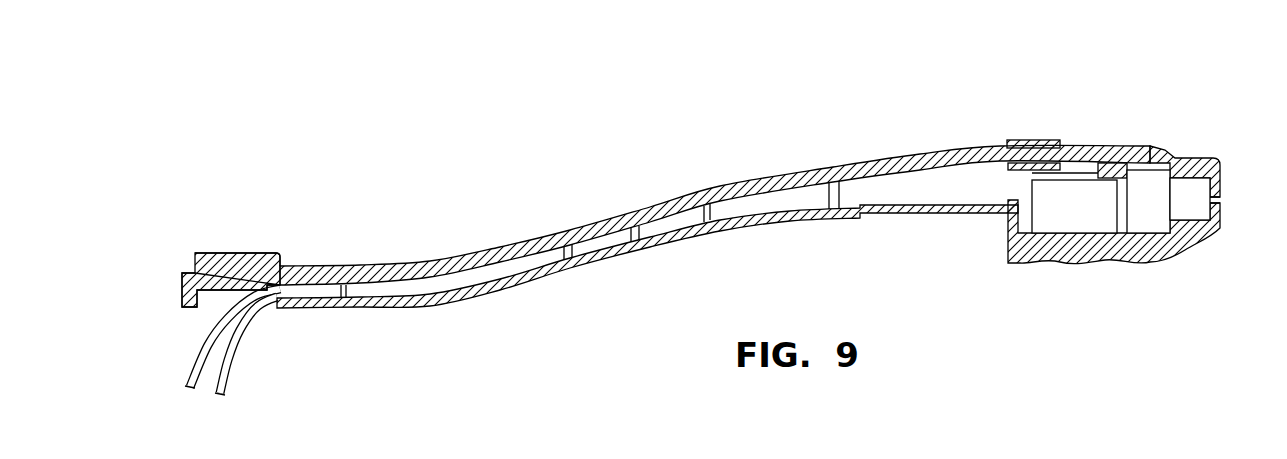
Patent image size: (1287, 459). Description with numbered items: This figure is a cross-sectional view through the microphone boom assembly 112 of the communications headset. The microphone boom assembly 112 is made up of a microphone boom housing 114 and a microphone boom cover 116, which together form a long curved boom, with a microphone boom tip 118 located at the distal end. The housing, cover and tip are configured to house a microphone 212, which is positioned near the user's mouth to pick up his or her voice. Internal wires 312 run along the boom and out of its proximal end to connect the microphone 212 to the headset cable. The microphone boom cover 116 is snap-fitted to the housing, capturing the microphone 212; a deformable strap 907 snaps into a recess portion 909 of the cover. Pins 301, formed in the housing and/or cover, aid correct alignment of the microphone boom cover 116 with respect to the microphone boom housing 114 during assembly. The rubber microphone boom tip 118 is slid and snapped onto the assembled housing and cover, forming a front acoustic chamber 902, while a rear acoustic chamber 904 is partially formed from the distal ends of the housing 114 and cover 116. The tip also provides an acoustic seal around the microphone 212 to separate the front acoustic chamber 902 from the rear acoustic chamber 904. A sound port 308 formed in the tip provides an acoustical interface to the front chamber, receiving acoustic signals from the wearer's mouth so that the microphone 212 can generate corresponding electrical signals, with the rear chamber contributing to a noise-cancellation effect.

The microphone boom assembly 112 is at (708, 204).
The microphone boom housing 114 is at (714, 245).
The microphone boom cover 116 is at (763, 152).
The microphone boom tip 118 is at (1116, 184).
The microphone 212 is at (1151, 146).
The pins 301 is at (565, 242).
The sound port 308 is at (1220, 200).
The wires 312 is at (210, 335).
The front acoustic chamber 902 is at (1187, 195).
The rear acoustic chamber 904 is at (1097, 207).
The deformable strap 907 is at (1057, 147).
The recess portion 909 is at (1020, 140).